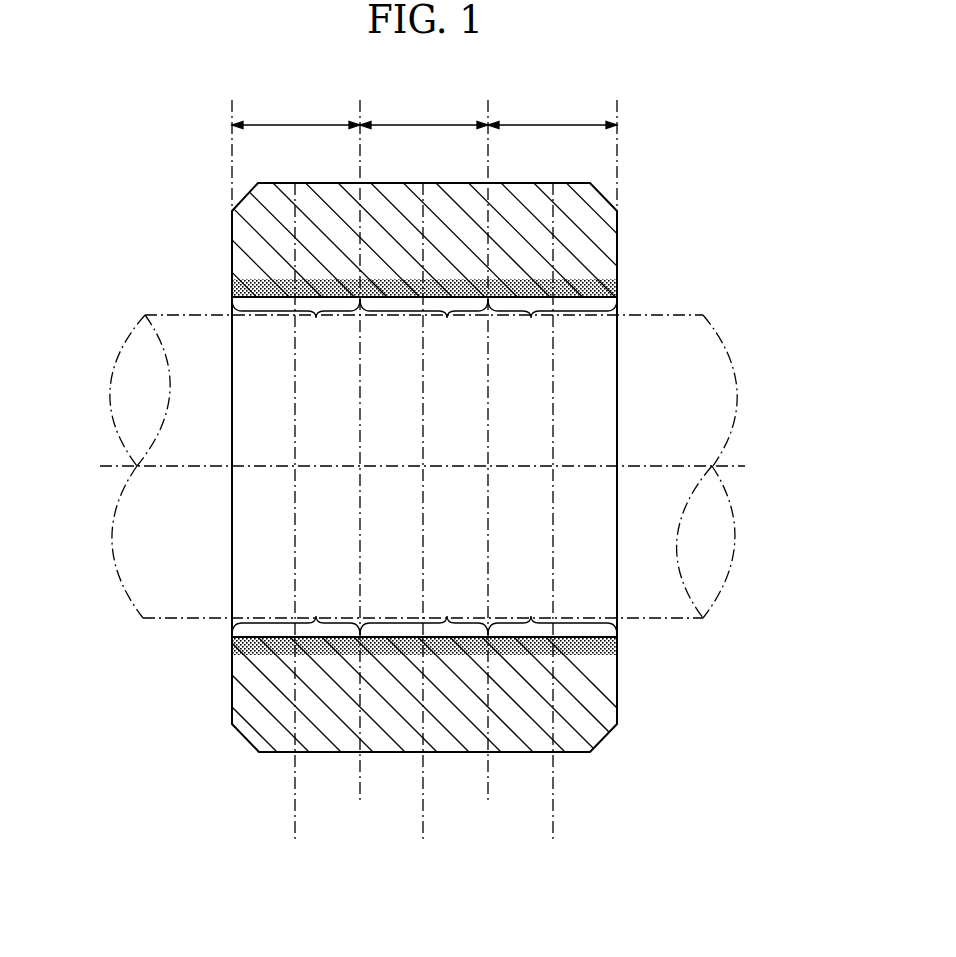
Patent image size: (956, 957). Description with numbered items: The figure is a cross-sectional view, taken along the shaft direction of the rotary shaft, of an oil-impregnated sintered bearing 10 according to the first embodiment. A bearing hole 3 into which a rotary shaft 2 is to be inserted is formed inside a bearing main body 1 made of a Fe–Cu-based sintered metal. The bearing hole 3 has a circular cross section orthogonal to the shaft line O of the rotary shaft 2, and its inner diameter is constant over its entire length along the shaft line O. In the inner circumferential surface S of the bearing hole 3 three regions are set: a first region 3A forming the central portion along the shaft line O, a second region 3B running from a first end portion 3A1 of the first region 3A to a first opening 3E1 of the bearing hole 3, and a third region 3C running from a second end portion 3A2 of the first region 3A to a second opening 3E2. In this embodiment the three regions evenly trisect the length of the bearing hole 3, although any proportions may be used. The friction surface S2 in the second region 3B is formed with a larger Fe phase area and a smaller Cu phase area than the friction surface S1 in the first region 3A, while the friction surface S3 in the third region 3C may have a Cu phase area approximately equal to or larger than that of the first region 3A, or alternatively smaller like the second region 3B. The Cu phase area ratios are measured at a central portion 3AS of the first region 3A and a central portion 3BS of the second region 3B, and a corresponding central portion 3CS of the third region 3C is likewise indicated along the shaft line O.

The bearing main body 1 is at (271, 187).
The rotary shaft 2 is at (163, 618).
The bearing hole 3 is at (598, 590).
The oil-impregnated sintered bearing 10 is at (403, 487).
The first region 3A is at (424, 111).
The second region 3B is at (552, 152).
The third region 3C is at (296, 152).
The first end portion 3A1 is at (490, 468).
The second end portion 3A2 is at (362, 468).
The central portion of the first region 3AS is at (427, 532).
The central portion of the second region 3BS is at (557, 532).
The center section of second end-side region 3CS is at (297, 532).
The first opening 3E1 is at (617, 390).
The second opening 3E2 is at (232, 385).
The inner circumferential surface S is at (595, 312).
The friction surface in the first region S1 is at (424, 467).
The friction surface in the second region S2 is at (552, 467).
The friction surface in the third region S3 is at (296, 467).
The shaft line O is at (436, 467).